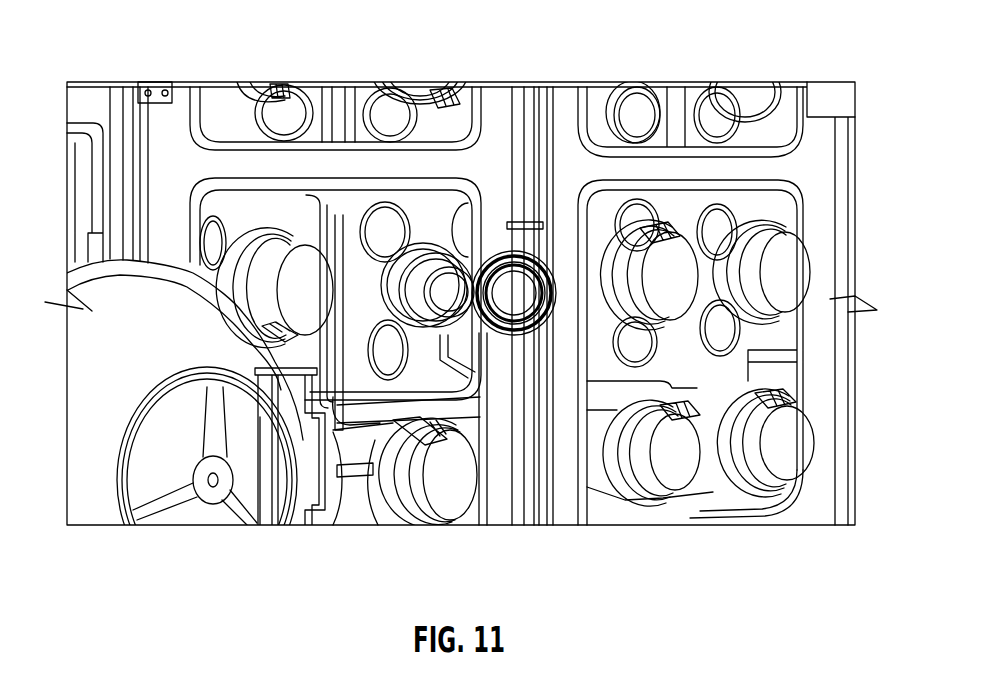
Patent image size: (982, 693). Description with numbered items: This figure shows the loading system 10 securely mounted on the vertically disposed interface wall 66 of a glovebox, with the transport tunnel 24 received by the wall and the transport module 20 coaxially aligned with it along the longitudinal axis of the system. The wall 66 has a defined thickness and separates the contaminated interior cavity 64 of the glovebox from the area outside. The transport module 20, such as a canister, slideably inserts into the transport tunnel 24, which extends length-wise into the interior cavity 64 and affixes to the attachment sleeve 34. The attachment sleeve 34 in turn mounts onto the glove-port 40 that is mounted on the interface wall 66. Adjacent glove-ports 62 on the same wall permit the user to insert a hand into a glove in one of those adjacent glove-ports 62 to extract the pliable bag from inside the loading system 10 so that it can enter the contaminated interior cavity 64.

The loading system 10 is at (411, 305).
The transport module 20 is at (532, 302).
The transport tunnel 24 is at (433, 235).
The attachment sleeve 34 is at (437, 320).
The glove-port 40 is at (418, 262).
The adjacent glove-port 62 is at (297, 283).
The interior cavity 64 is at (403, 243).
The wall 66 is at (493, 192).